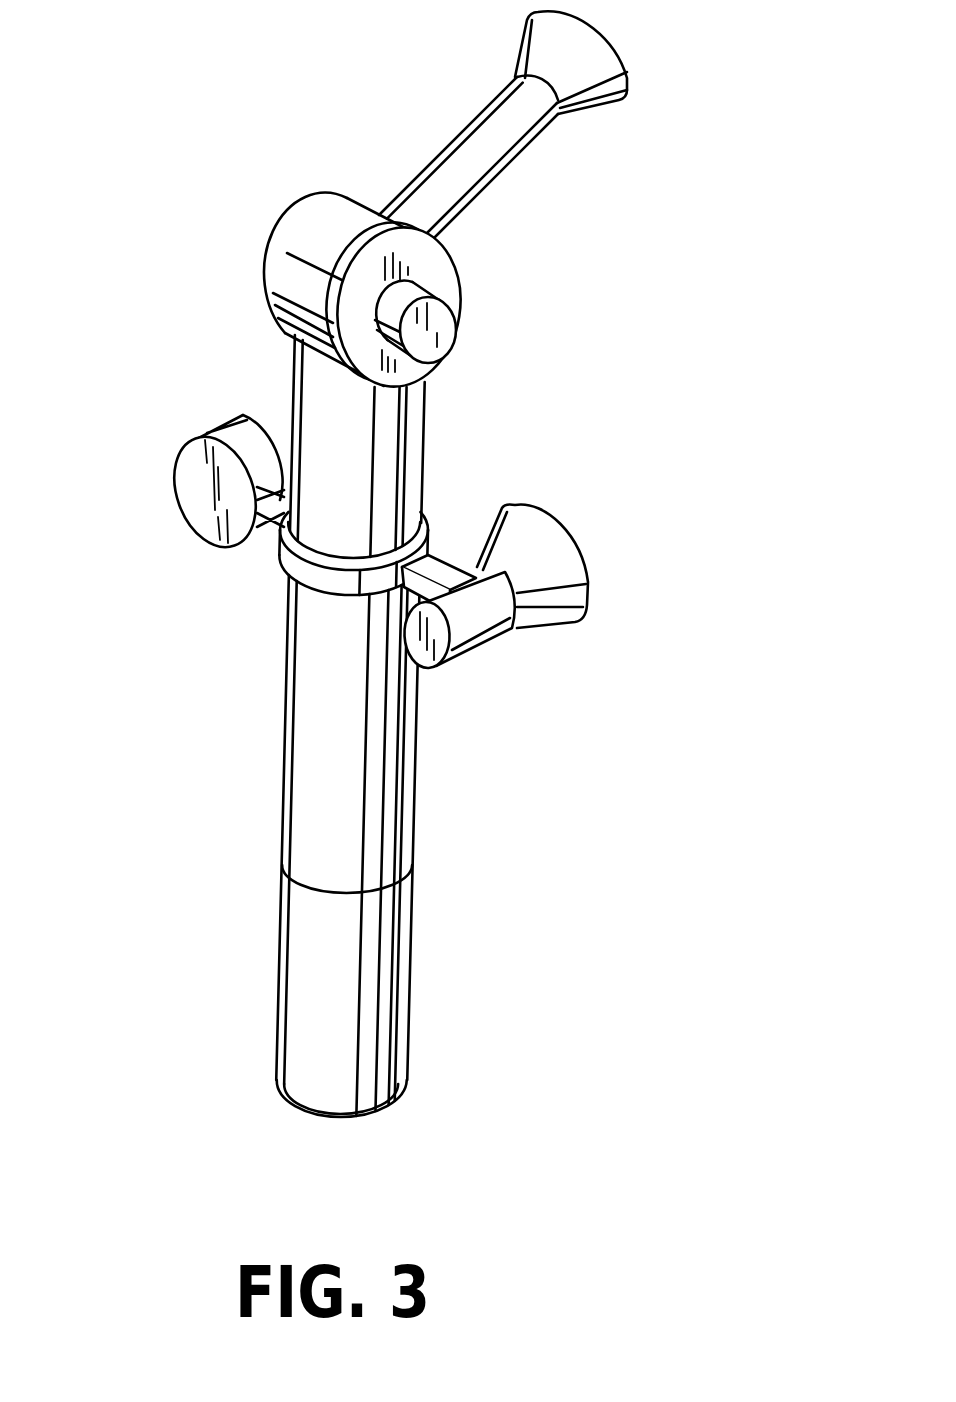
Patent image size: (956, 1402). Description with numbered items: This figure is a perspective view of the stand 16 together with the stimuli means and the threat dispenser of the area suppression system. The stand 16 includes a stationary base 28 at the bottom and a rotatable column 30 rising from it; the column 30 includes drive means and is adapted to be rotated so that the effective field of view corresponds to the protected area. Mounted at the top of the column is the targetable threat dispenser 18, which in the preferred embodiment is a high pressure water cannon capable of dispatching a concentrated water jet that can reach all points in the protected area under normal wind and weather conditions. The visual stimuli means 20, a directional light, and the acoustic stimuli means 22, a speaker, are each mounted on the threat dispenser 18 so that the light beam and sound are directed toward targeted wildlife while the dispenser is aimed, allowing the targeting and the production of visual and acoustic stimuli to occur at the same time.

The stand 16 is at (373, 564).
The targetable threat dispenser 18 is at (488, 150).
The visual stimuli means 20 is at (177, 466).
The acoustic stimuli means 22 is at (557, 602).
The stationary base 28 is at (375, 960).
The rotatable column 30 is at (375, 777).